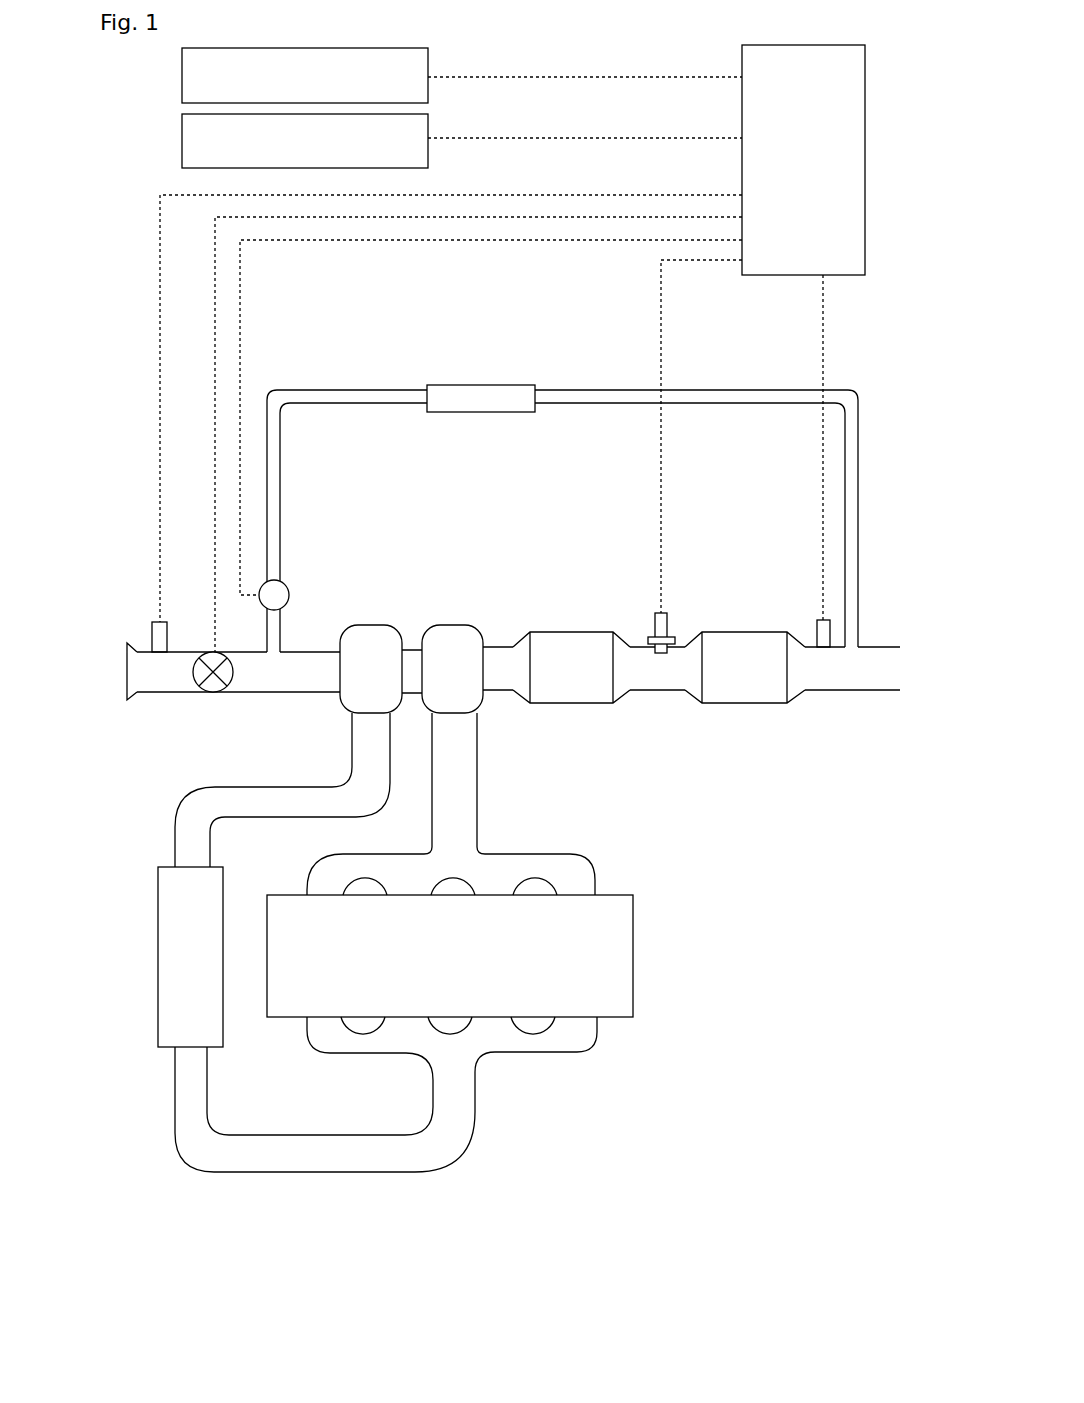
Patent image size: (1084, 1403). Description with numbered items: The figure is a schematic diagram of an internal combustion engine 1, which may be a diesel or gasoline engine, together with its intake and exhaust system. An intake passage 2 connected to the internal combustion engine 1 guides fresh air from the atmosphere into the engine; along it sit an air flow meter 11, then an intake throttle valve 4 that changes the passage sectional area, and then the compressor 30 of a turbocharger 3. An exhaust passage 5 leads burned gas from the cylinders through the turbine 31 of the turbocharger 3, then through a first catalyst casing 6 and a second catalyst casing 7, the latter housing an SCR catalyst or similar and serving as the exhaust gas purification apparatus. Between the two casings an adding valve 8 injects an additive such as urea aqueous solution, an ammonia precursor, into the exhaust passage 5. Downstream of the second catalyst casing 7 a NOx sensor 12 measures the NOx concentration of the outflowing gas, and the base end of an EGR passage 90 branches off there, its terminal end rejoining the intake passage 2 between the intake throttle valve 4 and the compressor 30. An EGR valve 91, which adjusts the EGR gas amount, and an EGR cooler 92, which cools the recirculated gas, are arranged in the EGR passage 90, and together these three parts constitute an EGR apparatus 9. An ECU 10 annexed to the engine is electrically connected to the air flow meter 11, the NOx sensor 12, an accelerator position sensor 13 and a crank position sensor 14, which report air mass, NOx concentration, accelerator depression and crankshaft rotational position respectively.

The internal combustion engine 1 is at (633, 960).
The intake passage 2 is at (302, 1172).
The turbocharger 3 is at (417, 617).
The intake throttle valve 4 is at (207, 693).
The exhaust passage 5 is at (477, 820).
The first catalyst casing 6 is at (583, 703).
The second catalyst casing 7 is at (763, 703).
The adding valve 8 is at (655, 615).
The EGR apparatus 9 is at (558, 468).
The ECU 10 is at (865, 228).
The air flow meter 11 is at (152, 625).
The NOx sensor 12 is at (817, 622).
The accelerator position sensor 13 is at (182, 78).
The crank position sensor 14 is at (182, 140).
The compressor 30 is at (363, 625).
The turbine 31 is at (408, 637).
The EGR passage 90 is at (710, 388).
The EGR valve 91 is at (288, 588).
The EGR cooler 92 is at (483, 385).